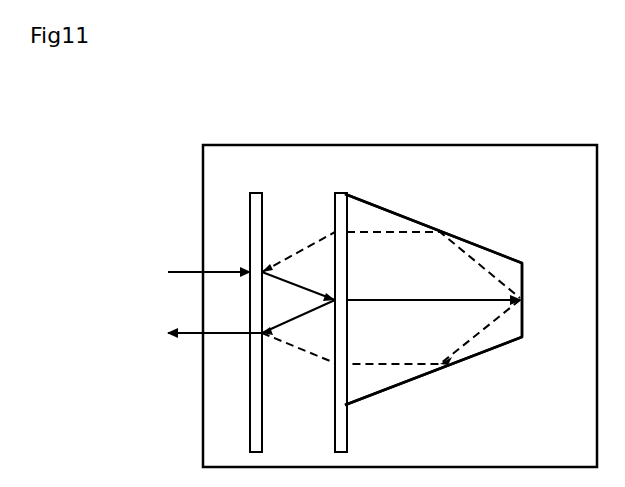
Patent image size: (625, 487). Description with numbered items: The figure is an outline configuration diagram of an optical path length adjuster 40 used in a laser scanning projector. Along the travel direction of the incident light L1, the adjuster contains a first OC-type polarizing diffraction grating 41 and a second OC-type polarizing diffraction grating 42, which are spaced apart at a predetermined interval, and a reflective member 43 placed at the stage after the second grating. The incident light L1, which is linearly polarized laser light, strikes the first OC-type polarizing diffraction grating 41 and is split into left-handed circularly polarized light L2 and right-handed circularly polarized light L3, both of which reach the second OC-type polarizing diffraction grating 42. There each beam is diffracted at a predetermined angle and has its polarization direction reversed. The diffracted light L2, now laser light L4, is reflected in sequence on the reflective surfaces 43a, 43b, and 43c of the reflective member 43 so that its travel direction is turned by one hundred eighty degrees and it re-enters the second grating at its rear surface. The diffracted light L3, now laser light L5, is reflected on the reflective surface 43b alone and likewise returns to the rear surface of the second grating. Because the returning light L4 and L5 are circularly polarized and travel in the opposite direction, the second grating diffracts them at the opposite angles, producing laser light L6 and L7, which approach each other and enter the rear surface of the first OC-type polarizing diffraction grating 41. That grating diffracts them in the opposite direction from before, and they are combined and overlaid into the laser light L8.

The optical path length adjuster 40 is at (575, 145).
The first OC-type polarizing diffraction grating 41 is at (262, 423).
The second OC-type polarizing diffraction grating 42 is at (347, 423).
The reflective member 43 is at (496, 253).
The reflective surface 43a is at (412, 219).
The reflective surface 43b is at (522, 290).
The reflective surface 43c is at (458, 362).
The incident light L1 is at (209, 260).
The left-handed circularly polarized light L2 is at (298, 247).
The right-handed circularly polarized light L3 is at (298, 286).
The laser light L4 is at (433, 299).
The laser light L5 is at (434, 313).
The laser light L6 is at (298, 357).
The laser light L7 is at (298, 322).
The laser light L8 is at (214, 322).